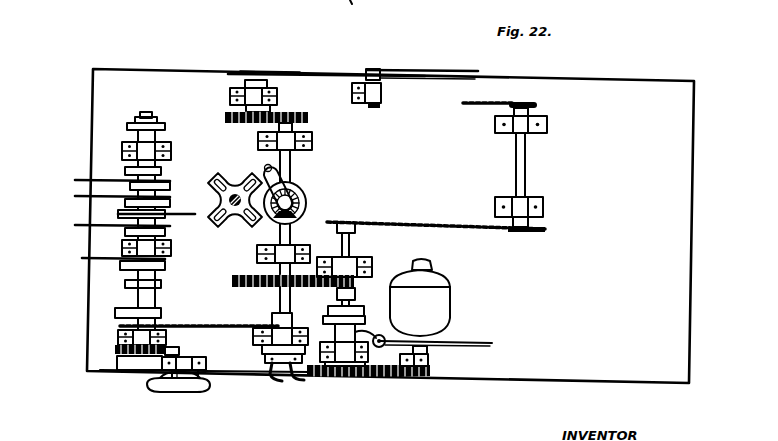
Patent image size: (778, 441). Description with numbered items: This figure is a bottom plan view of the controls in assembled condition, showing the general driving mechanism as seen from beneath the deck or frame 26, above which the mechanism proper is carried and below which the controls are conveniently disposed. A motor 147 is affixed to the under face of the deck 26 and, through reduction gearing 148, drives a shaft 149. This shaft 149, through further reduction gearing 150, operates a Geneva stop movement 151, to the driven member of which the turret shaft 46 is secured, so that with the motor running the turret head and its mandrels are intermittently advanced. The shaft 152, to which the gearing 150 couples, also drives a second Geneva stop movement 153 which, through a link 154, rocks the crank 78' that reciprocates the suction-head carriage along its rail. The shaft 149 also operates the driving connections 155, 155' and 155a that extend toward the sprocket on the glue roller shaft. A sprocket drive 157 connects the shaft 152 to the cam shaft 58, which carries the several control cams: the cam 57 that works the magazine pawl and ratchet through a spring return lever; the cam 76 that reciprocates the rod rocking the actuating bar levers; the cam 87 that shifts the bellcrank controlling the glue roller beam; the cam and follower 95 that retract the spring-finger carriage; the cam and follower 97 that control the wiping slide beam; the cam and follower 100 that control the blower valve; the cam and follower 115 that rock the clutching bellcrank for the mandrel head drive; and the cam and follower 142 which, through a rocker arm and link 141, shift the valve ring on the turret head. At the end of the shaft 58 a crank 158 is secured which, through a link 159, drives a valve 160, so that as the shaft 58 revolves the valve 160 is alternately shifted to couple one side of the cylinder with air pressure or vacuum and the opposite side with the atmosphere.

The deck or frame 26 is at (592, 312).
The shaft of the turret 46 is at (237, 207).
The cam 57 is at (162, 313).
The shaft 58 is at (138, 292).
The cam 76 is at (164, 126).
The rocking lever or crank 78' is at (415, 79).
The cam 87 is at (122, 214).
The cam and follower 95 is at (171, 202).
The cam and follower 97 is at (171, 188).
The cam and follower 100 is at (162, 172).
The cam and follower 115 is at (161, 266).
The link 141 is at (78, 231).
The cam and follower 142 is at (163, 235).
The motor 147 is at (445, 303).
The reduction gearing 148 is at (371, 378).
The shaft 149 is at (351, 245).
The reduction gearing 150 is at (306, 288).
The Geneva stop movement 151 is at (257, 175).
The shaft 152 is at (291, 158).
The second Geneva stop movement 153 is at (270, 110).
The link 154 is at (333, 73).
The driving connection 155 is at (436, 214).
The driving connection 155' is at (510, 167).
The driving connection 155a is at (470, 107).
The sprocket drive 157 is at (197, 327).
The crank 158 is at (131, 366).
The link 159 is at (225, 374).
The valve 160 is at (285, 374).